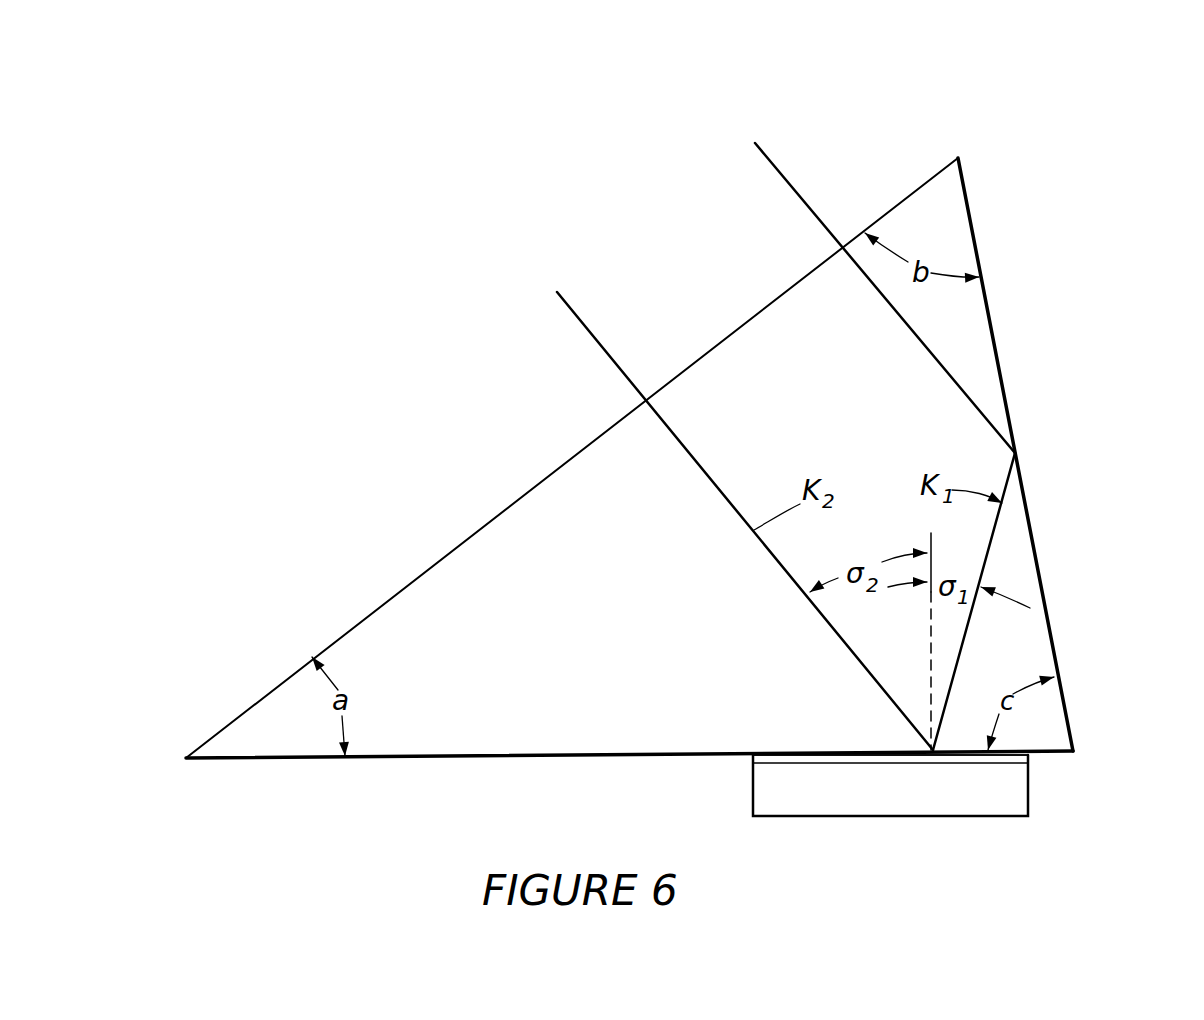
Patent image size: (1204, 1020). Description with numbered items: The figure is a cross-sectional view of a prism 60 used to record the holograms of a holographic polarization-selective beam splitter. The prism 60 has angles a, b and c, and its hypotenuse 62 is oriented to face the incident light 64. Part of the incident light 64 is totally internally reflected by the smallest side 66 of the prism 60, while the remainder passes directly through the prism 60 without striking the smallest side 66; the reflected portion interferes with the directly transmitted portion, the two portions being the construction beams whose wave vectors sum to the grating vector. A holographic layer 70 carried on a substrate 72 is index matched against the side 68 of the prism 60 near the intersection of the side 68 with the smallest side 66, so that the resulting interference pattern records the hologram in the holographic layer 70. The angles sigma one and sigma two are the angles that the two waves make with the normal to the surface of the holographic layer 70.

The prism 60 is at (1033, 162).
The hypotenuse 62 is at (392, 597).
The incident light 64 is at (790, 184).
The smallest side 66 is at (1029, 516).
The side 68 is at (510, 758).
The holographic layer 70 is at (1028, 757).
The substrate 72 is at (1013, 790).